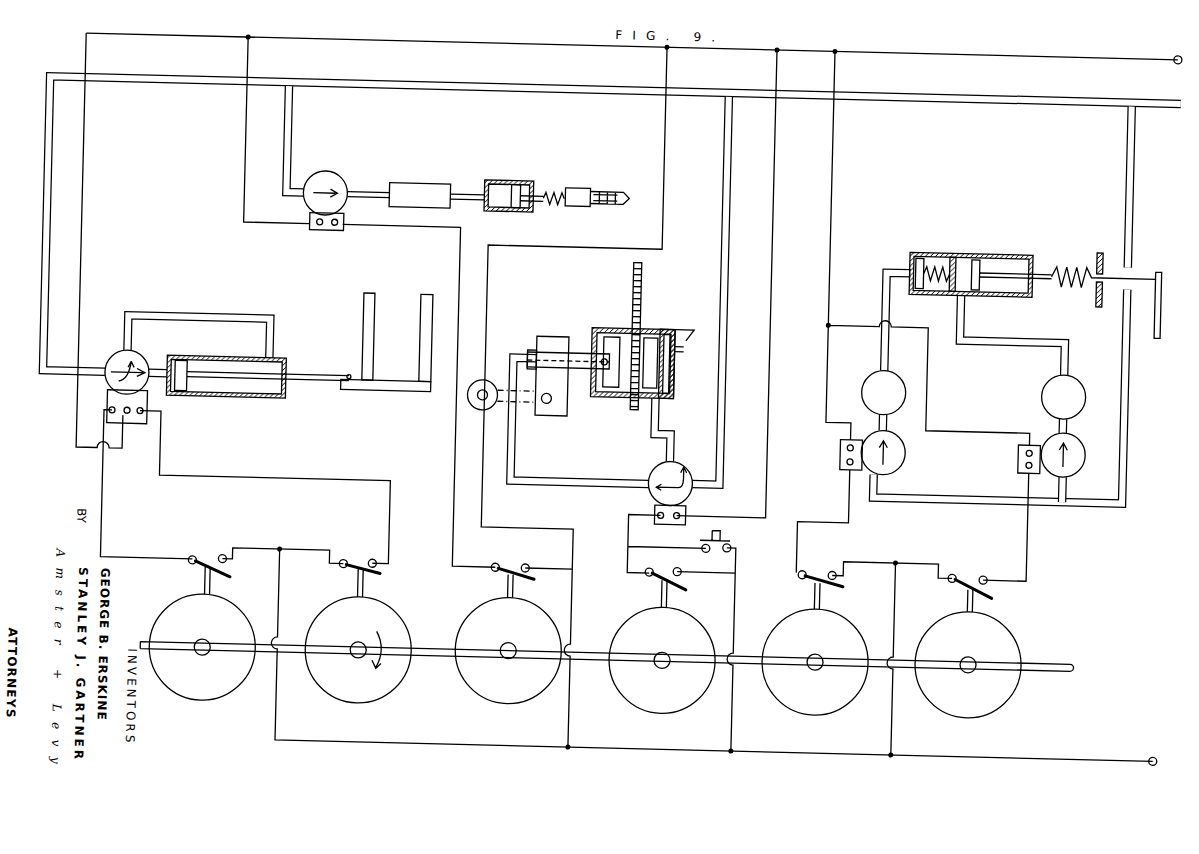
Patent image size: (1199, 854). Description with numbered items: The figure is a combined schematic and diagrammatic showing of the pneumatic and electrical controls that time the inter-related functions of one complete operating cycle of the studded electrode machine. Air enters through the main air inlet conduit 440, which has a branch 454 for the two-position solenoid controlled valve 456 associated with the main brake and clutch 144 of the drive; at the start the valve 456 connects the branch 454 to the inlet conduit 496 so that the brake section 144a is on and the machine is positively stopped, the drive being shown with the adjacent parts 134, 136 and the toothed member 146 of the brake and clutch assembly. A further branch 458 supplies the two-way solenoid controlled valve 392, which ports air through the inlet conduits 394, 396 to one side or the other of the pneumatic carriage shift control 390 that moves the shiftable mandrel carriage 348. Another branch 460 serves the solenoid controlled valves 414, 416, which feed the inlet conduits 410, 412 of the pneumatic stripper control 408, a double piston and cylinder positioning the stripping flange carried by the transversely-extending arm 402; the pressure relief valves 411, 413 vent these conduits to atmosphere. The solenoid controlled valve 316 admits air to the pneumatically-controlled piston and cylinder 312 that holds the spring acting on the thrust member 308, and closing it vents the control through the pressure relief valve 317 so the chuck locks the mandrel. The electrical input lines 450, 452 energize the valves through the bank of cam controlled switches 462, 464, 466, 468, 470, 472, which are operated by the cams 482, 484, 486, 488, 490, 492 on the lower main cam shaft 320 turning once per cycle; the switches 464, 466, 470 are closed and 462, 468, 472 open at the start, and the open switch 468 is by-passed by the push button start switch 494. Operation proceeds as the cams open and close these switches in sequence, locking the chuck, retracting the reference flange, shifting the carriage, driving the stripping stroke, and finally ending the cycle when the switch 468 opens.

The electrical input line 450 is at (962, 33).
The main air inlet conduit 440 is at (972, 72).
The branch 458 is at (54, 244).
The solenoid controlled valve 316 is at (340, 164).
The pressure relief valve 317 is at (423, 172).
The pneumatically-controlled piston and cylinder 312 is at (504, 166).
The thrust member 308 is at (612, 176).
The branch 454 is at (727, 210).
The branch 460 is at (1140, 192).
The pneumatic stripper control 408 is at (955, 228).
The inlet conduit 410 is at (975, 302).
The transversely-extending arm 402 is at (1169, 296).
The rack 146 is at (650, 268).
The brake section 144a is at (700, 312).
The bearing block 136 is at (560, 322).
The shaft 134 is at (497, 368).
The main brake and clutch 144 is at (615, 390).
The inlet conduit 496 is at (675, 406).
The two-position solenoid controlled valve 456 is at (664, 478).
The push button start switch 494 is at (738, 514).
The pressure relief valve 413 is at (878, 356).
The inlet conduit 412 is at (897, 340).
The pressure relief valve 411 is at (1051, 368).
The solenoid controlled valve 414 is at (1086, 420).
The solenoid controlled valve 416 is at (916, 436).
The inlet conduit 396 is at (198, 312).
The two-way solenoid controlled valve 392 is at (120, 350).
The inlet conduit 394 is at (164, 360).
The pneumatic carriage shift control 390 is at (260, 392).
The carriage 348 is at (402, 382).
The cam controlled switch 462 is at (214, 551).
The cam controlled switch 464 is at (372, 552).
The cam controlled switch 466 is at (526, 552).
The cam controlled switch 468 is at (660, 562).
The cam controlled switch 470 is at (826, 550).
The cam controlled switch 472 is at (988, 550).
The cam 482 is at (232, 690).
The cam 484 is at (360, 686).
The cam 486 is at (504, 684).
The cam 488 is at (646, 690).
The cam 490 is at (806, 684).
The cam 492 is at (972, 686).
The lower main cam shaft 320 is at (1066, 634).
The electrical input line 452 is at (1058, 736).